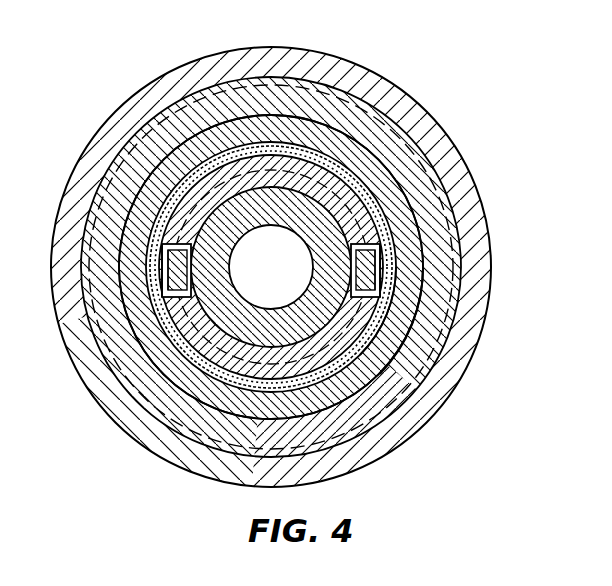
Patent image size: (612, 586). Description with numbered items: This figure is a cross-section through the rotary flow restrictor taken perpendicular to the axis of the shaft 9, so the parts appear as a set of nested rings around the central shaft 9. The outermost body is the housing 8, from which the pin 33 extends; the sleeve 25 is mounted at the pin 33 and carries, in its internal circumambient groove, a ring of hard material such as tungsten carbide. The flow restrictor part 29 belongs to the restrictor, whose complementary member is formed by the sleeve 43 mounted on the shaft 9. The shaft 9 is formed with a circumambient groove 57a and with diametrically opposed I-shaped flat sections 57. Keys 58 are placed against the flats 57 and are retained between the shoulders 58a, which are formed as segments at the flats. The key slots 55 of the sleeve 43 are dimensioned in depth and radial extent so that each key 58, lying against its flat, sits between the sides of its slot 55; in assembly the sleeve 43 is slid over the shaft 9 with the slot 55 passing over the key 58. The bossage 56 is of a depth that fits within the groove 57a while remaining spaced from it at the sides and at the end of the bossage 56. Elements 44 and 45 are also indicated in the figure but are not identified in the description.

The housing 8 is at (402, 430).
The pin 33 is at (343, 135).
The shoulder 45 is at (373, 125).
The flow restrictor part 29 is at (276, 128).
The sleeve 25 is at (328, 153).
The bearing ring 44 is at (252, 146).
The bossage 56 is at (217, 183).
The I-shaped flat section 57 is at (352, 273).
The shaft 9 is at (226, 258).
The key 58 is at (168, 250).
The shoulder 58a is at (157, 232).
The key slot 55 is at (165, 273).
The sleeve 43 is at (405, 333).
The circumambient groove 57a is at (385, 365).